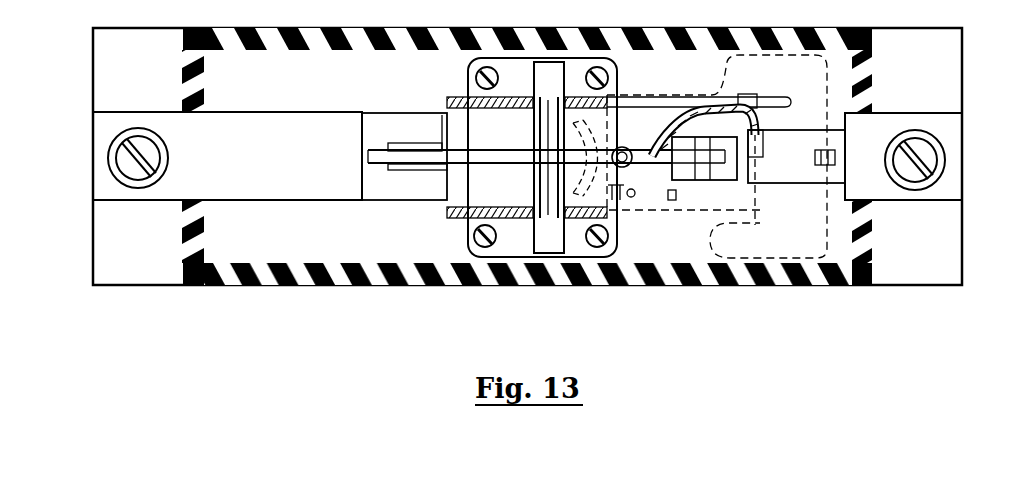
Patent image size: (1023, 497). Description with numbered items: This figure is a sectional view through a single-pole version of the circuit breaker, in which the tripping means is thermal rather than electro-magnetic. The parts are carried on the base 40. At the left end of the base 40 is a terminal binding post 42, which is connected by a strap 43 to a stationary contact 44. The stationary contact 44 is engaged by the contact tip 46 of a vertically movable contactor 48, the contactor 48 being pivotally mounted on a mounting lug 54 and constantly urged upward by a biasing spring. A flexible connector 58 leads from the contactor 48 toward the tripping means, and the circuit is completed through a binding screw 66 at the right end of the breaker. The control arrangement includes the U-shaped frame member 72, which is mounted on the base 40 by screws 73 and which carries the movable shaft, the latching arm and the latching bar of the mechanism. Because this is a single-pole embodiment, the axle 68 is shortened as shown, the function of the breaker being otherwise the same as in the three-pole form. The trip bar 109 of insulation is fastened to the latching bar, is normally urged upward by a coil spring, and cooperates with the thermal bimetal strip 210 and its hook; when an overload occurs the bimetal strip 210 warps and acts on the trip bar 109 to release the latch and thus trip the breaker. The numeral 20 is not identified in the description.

The ring 20 is at (615, 157).
The base 40 is at (240, 285).
The terminal binding post 42 is at (108, 163).
The strap 43 is at (292, 190).
The stationary contact 44 is at (388, 170).
The contact tip 46 is at (428, 143).
The contactor 48 is at (505, 166).
The mounting lug 54 is at (728, 180).
The flexible connector 58 is at (666, 124).
The binding screw 66 is at (942, 150).
The axle 68 is at (537, 66).
The frame member 72 is at (449, 214).
The screw 73 is at (476, 78).
The trip bar 109 is at (727, 66).
The thermal bimetal strip 210 is at (815, 160).